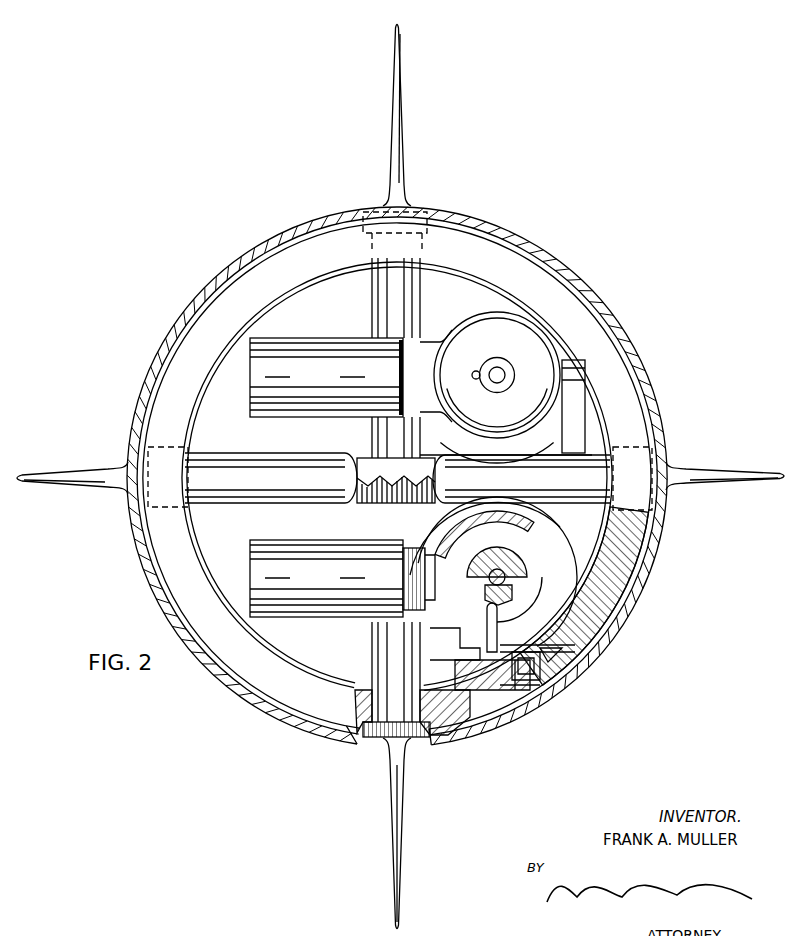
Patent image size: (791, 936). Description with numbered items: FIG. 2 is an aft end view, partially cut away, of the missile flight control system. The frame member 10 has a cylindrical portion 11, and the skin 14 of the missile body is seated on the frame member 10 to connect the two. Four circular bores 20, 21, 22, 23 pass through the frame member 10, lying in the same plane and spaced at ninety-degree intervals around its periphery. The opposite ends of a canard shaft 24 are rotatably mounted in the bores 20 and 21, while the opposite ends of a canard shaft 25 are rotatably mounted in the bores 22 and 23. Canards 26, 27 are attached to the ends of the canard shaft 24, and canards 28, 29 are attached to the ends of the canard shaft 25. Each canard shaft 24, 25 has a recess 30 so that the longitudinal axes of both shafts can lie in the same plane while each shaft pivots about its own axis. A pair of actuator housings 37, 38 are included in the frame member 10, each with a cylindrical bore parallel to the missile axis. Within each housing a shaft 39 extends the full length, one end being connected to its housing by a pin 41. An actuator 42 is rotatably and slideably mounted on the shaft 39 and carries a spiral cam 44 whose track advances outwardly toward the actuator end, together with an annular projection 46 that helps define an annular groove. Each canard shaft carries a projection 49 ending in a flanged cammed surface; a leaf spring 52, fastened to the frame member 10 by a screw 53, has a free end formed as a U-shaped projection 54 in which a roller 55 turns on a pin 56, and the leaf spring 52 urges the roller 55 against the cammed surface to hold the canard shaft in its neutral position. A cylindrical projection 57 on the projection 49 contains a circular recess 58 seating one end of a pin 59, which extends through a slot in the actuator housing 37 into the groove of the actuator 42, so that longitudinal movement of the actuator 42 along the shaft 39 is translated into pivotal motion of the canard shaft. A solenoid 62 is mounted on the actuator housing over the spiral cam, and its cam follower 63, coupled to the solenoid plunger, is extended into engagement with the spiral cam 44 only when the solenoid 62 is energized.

The frame member 10 is at (648, 562).
The cylindrical portion 11 is at (570, 306).
The skin 14 is at (648, 382).
The circular bore 20 is at (440, 736).
The circular bore 21 is at (430, 232).
The circular bore 22 is at (152, 502).
The circular bore 23 is at (638, 448).
The canard shaft 24 is at (388, 298).
The canard shaft 25 is at (397, 478).
The canard 26 is at (392, 812).
The canard 27 is at (401, 90).
The canard 28 is at (108, 485).
The canard 29 is at (690, 482).
The recess 30 is at (372, 492).
The actuator housing 37 is at (510, 510).
The actuator housing 38 is at (452, 294).
The shaft 39 is at (500, 373).
The pin 41 is at (478, 370).
The actuator 42 is at (530, 556).
The spiral cam 44 is at (514, 540).
The annular projection 46 is at (497, 571).
The projection 49 is at (433, 666).
The leaf spring 52 is at (545, 662).
The screw 53 is at (560, 656).
The U-shaped projection 54 is at (532, 672).
The roller 55 is at (514, 695).
The pin 56 is at (522, 682).
The cylindrical projection 57 is at (458, 664).
The circular recess 58 is at (492, 682).
The pin 59 is at (488, 628).
The solenoid 62 is at (326, 477).
The cam follower 63 is at (420, 548).